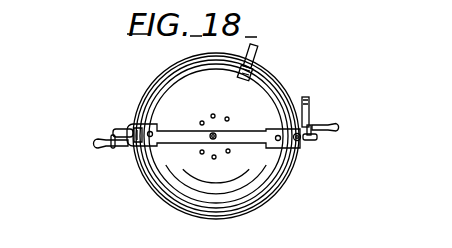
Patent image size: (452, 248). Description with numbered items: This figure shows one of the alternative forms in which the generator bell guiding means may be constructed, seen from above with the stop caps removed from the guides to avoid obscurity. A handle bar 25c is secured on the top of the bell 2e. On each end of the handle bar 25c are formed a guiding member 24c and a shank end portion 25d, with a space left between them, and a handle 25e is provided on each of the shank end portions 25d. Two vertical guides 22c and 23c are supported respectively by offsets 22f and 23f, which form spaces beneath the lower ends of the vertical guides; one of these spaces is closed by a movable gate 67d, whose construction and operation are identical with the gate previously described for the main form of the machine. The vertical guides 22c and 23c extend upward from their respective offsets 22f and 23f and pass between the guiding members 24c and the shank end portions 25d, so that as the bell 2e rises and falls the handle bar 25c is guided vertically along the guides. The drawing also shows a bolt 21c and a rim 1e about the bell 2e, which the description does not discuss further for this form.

The rim ring 1e is at (260, 74).
The bell 2e is at (280, 92).
The bolt 21c is at (259, 48).
The vertical guide 22c is at (122, 128).
The offset 22f is at (118, 136).
The vertical guide 23c is at (303, 148).
The offset 23f is at (315, 142).
The guiding member 24c is at (300, 160).
The handle bar 25c is at (176, 129).
The shank end portion 25d is at (322, 98).
The handle 25e is at (326, 118).
The movable gate 67d is at (305, 97).